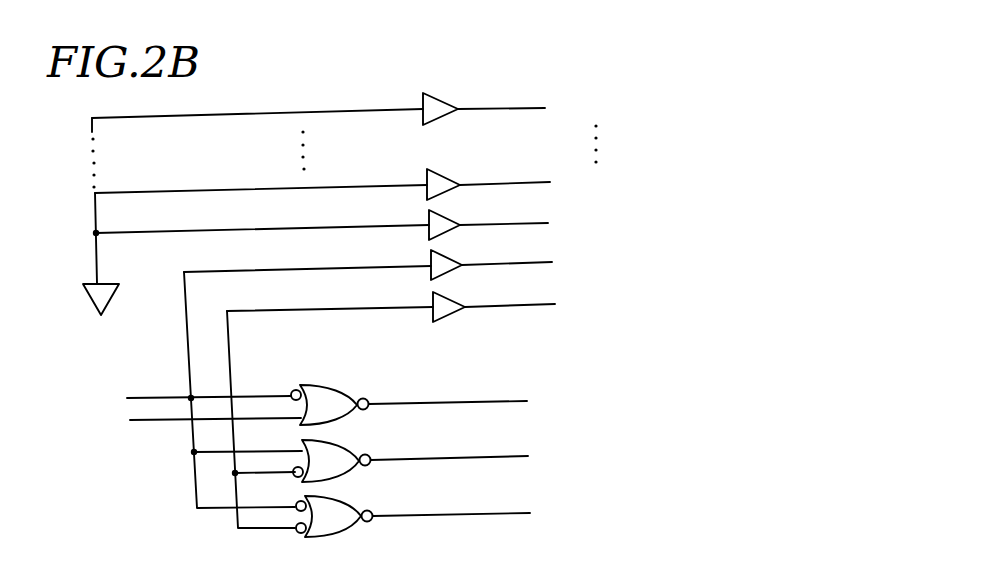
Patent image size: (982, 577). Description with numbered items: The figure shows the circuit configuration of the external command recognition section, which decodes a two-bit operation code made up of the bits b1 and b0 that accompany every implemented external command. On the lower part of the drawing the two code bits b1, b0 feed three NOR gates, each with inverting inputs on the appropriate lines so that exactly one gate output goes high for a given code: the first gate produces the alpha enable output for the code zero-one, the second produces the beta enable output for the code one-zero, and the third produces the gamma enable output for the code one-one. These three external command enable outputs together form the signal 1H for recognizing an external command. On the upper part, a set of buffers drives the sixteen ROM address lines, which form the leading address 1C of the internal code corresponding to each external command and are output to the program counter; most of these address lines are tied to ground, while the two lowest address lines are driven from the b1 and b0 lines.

The leading address signal 1C is at (652, 83).
The signal for recognizing an external command 1H is at (830, 367).
The operation code bit b1 is at (194, 399).
The operation code bit b0 is at (199, 420).